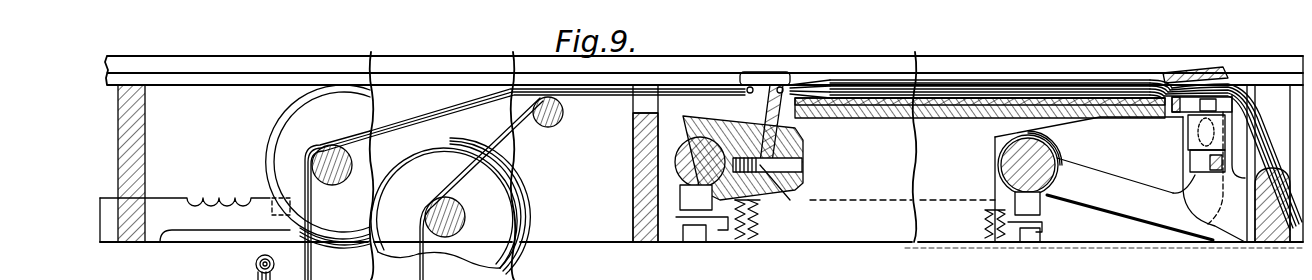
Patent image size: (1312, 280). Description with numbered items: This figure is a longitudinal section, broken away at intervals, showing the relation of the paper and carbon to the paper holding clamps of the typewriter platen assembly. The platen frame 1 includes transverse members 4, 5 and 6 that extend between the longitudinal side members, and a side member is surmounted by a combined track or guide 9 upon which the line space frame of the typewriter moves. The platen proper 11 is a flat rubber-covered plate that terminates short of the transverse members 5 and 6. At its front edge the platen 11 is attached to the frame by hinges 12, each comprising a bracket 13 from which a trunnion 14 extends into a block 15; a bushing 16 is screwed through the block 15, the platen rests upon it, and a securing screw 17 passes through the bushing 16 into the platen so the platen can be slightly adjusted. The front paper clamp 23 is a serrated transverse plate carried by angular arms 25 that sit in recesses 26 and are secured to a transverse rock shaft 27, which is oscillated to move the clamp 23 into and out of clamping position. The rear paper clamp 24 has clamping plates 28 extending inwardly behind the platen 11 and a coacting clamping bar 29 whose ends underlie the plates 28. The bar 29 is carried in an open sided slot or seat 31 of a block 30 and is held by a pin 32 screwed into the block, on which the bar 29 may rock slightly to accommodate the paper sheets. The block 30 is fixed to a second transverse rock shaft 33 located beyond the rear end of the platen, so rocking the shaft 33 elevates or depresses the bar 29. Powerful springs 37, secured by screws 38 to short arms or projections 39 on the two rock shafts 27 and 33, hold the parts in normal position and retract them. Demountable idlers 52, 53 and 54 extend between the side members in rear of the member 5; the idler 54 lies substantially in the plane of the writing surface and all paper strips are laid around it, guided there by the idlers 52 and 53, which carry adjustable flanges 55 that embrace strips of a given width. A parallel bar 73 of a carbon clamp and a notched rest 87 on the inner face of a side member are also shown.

The platen frame 1 is at (1278, 242).
The transverse member 4 is at (140, 130).
The transverse member 5 is at (632, 137).
The transverse member 6 is at (1279, 128).
The combined track or guide 9 is at (152, 57).
The platen proper 11 is at (956, 108).
The hinge 12 is at (1235, 157).
The bracket 13 is at (1230, 222).
The trunnion 14 is at (1195, 140).
The block 15 is at (1200, 152).
The bushing 16 is at (1205, 165).
The securing screw 17 is at (1175, 193).
The front paper clamp 23 is at (1185, 68).
The rear paper clamp 24 is at (752, 78).
The angular arm 25 is at (1130, 222).
The recess 26 is at (1078, 124).
The transverse rock shaft 27 is at (997, 165).
The clamping plate 28 is at (781, 78).
The clamping bar 29 is at (790, 126).
The block 30 is at (705, 125).
The open sided slot or seat 31 is at (768, 200).
The pin 32 is at (803, 165).
The second transverse rock shaft 33 is at (676, 176).
The spring 37 is at (731, 240).
The screw 38 is at (688, 242).
The short arm or projection 39 is at (680, 197).
The idler 52 is at (310, 157).
The idler 53 is at (455, 205).
The idler 54 is at (560, 122).
The adjustable flange 55 is at (278, 116).
The parallel bar 73 is at (875, 278).
The notched rest 87 is at (188, 200).